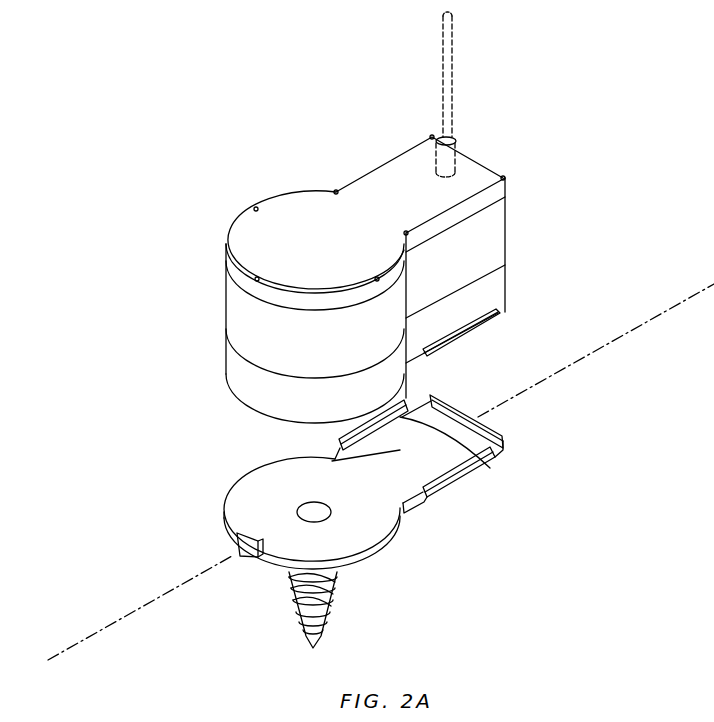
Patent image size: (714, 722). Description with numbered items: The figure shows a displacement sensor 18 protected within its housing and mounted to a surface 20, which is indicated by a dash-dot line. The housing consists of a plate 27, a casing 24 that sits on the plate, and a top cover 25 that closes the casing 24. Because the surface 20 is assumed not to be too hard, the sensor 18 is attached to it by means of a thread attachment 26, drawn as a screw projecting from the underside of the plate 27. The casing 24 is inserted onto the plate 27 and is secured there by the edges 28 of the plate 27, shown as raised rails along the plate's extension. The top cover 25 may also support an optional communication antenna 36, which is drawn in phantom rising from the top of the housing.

The displacement sensor 18 is at (333, 125).
The surface 20 is at (608, 346).
The casing 24 is at (243, 324).
The top cover 25 is at (288, 227).
The thread attachment 26 is at (303, 623).
The plate 27 is at (420, 506).
The edges 28 is at (492, 426).
The communication antenna 36 is at (448, 88).